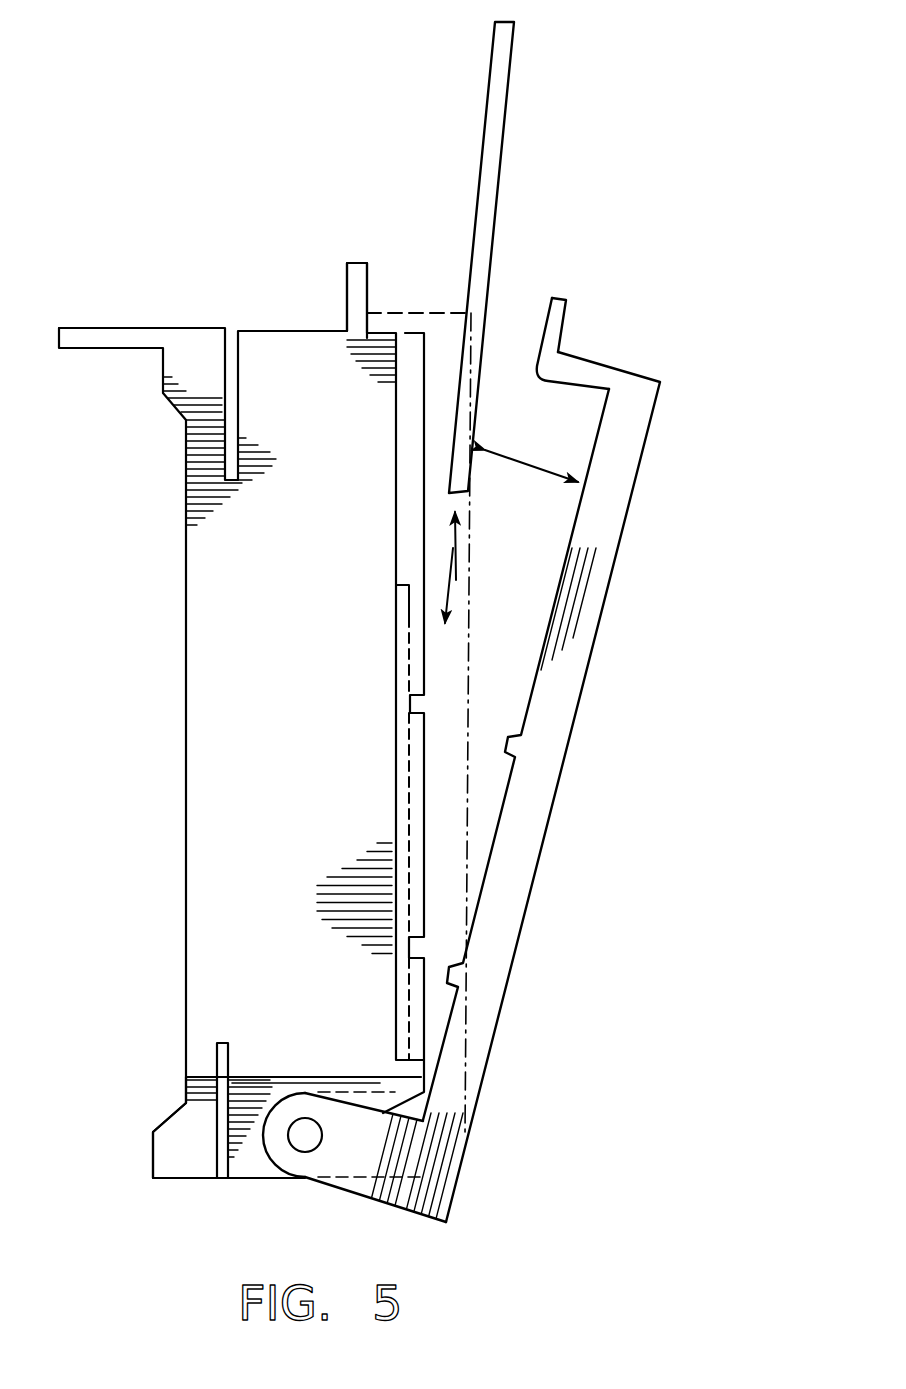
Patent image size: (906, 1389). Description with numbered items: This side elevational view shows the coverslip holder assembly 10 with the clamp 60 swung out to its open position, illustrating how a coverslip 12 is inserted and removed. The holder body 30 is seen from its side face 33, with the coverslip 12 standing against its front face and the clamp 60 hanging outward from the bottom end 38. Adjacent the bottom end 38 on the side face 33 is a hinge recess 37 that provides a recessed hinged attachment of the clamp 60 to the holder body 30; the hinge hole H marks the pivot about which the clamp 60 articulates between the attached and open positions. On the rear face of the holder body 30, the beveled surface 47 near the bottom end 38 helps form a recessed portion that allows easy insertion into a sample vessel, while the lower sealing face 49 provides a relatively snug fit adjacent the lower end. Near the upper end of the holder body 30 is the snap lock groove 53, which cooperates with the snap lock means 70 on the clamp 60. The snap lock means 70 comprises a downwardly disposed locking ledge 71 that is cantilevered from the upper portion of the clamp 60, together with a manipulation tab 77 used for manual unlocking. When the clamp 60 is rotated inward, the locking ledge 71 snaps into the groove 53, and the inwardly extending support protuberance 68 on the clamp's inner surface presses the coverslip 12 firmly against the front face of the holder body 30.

The assembly 10 is at (684, 273).
The coverslip 12 is at (496, 220).
The holder body 30 is at (172, 662).
The side face 33 is at (265, 827).
The hinge recess 37 is at (207, 1167).
The bottom end 38 is at (147, 1013).
The beveled surface 47 is at (168, 1117).
The lower sealing face 49 is at (153, 1155).
The snap lock groove 53 is at (356, 338).
The clamp 60 is at (605, 696).
The support protuberance 68 is at (509, 740).
The snap lock means 70 is at (332, 312).
The locking ledge 71 is at (540, 375).
The manipulation tab 77 is at (566, 305).
The hinge hole H is at (305, 1142).